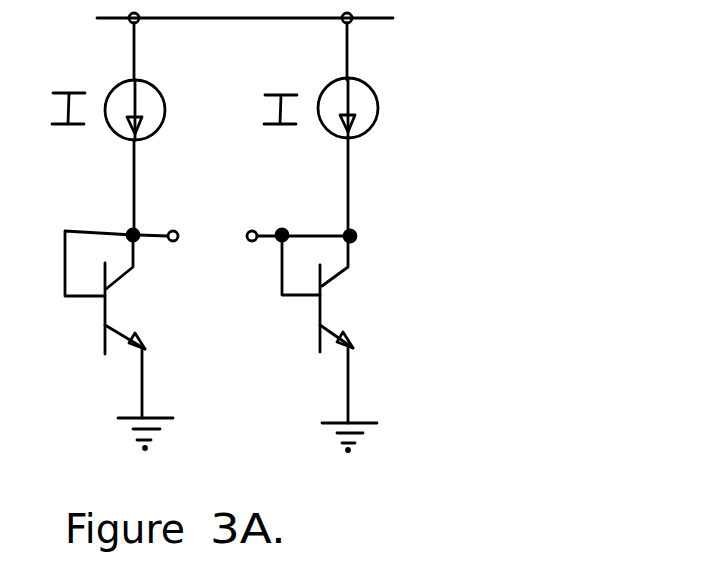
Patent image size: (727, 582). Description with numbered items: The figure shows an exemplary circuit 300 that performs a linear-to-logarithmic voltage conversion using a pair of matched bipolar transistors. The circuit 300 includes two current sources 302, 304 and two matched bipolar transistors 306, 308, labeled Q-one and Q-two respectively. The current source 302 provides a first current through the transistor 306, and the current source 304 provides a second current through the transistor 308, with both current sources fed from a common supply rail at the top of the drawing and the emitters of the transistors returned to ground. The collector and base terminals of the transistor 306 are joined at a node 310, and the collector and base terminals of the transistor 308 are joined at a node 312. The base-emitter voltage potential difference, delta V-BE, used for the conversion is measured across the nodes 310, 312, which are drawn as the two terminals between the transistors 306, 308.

The linear-to-logarithmic conversion circuit 300 is at (306, 264).
The current source 302 is at (167, 78).
The current source 304 is at (387, 98).
The matched bipolar transistor 306 is at (115, 307).
The matched bipolar transistor 308 is at (365, 346).
The node 310 is at (140, 226).
The node 312 is at (282, 223).